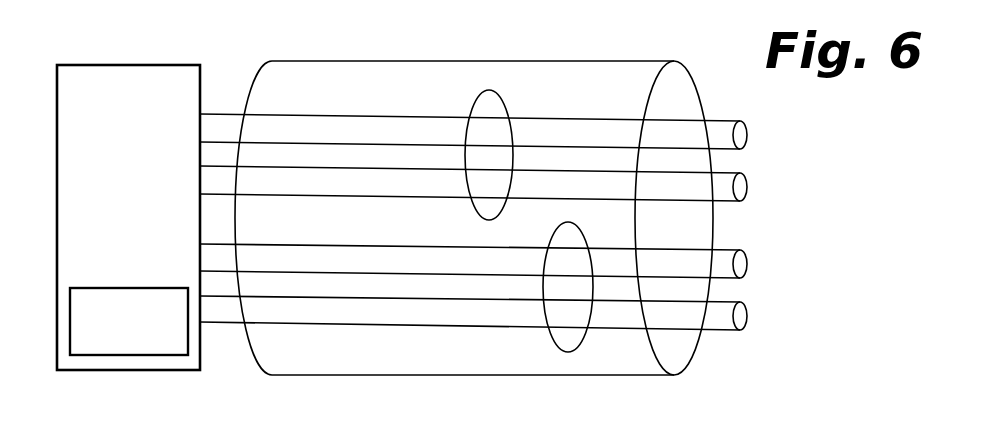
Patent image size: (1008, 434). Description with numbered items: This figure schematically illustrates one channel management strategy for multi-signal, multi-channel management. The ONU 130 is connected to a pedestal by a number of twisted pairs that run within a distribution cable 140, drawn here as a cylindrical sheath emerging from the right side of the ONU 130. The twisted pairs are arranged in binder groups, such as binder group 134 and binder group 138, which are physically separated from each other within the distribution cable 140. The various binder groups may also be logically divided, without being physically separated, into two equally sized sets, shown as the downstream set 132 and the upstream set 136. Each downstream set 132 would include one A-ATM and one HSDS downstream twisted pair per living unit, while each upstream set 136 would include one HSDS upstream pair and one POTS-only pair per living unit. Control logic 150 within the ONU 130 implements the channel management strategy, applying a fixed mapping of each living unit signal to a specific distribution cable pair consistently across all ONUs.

The ONU 130 is at (165, 65).
The downstream set 132 is at (474, 90).
The binder group 134 is at (574, 118).
The upstream set 136 is at (556, 359).
The binder group 138 is at (450, 325).
The distribution cable 140 is at (333, 375).
The control logic 150 is at (113, 355).